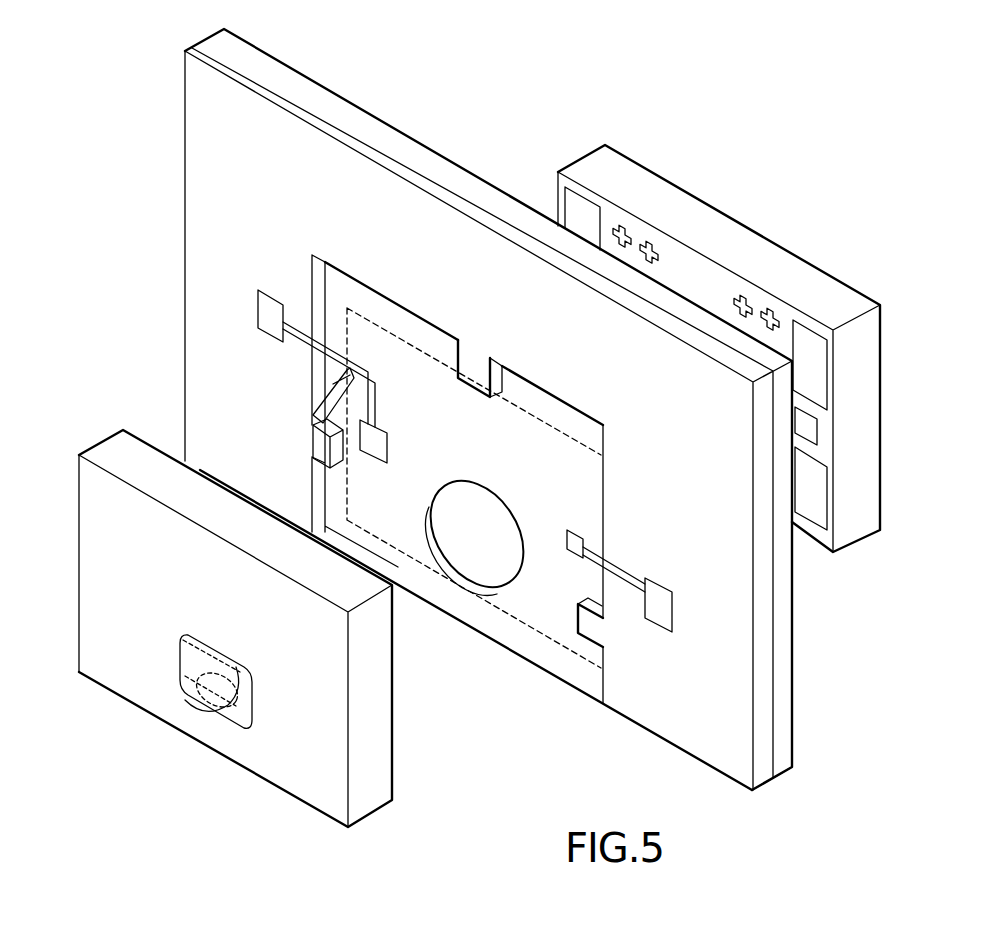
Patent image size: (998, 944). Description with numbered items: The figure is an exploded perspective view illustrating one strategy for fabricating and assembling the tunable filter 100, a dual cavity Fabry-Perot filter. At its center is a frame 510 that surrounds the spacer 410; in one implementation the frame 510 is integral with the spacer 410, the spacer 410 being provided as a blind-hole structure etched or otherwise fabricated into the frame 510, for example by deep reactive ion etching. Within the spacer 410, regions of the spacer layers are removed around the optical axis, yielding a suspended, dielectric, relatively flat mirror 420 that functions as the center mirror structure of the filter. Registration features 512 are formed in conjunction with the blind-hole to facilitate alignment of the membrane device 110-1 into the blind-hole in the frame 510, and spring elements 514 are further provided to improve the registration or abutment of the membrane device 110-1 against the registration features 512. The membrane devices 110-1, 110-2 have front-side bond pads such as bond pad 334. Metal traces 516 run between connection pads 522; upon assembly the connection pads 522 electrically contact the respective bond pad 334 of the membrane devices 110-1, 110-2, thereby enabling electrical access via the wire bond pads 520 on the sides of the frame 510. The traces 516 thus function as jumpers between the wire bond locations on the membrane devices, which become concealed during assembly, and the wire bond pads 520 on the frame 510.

The tunable filter 100 is at (905, 272).
The membrane device 110-1 is at (377, 810).
The membrane device 110-2 is at (858, 540).
The bond pad 334 is at (818, 433).
The spacer 410 is at (543, 657).
The mirror 420 is at (478, 557).
The frame 510 is at (790, 720).
The registration features 512 is at (477, 362).
The spring elements 514 is at (325, 388).
The metal traces 516 is at (303, 322).
The wire bond pads 520 is at (258, 303).
The connection pads 522 is at (388, 449).